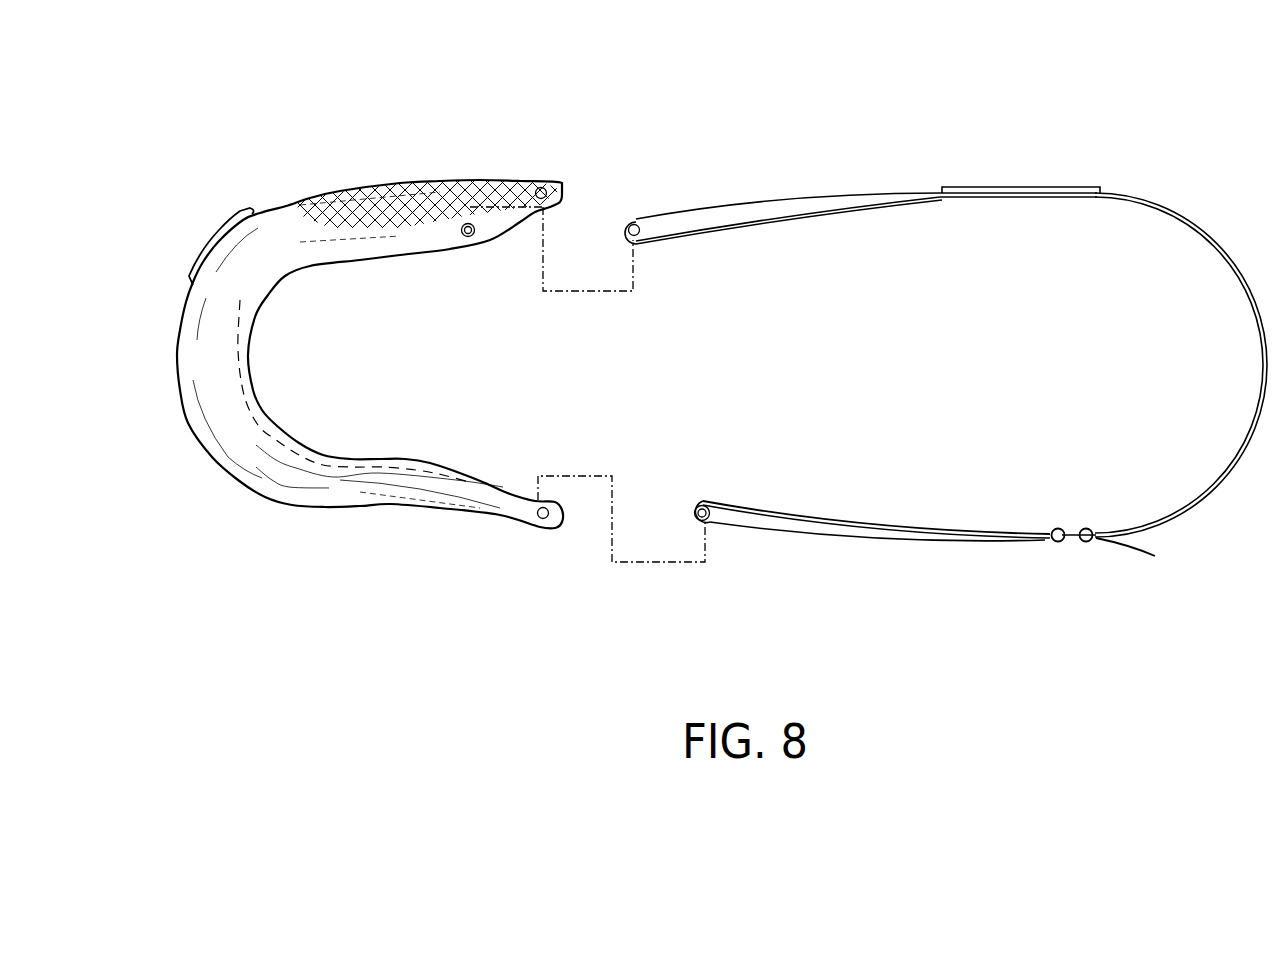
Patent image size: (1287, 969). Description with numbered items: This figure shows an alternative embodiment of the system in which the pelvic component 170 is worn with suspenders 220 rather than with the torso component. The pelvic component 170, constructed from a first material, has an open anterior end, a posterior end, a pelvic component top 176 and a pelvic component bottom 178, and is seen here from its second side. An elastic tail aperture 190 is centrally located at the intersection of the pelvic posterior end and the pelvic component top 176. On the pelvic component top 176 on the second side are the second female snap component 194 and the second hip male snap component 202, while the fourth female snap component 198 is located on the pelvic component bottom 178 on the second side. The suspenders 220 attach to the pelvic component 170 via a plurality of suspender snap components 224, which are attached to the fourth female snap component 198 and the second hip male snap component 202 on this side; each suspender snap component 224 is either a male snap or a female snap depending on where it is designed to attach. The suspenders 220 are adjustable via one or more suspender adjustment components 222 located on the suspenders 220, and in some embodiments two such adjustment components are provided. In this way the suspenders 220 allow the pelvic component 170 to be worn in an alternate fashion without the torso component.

The pelvic component 170 is at (355, 172).
The pelvic component top 176 is at (457, 195).
The pelvic component bottom 178 is at (295, 492).
The elastic tail aperture 190 is at (219, 230).
The second female snap component 194 is at (545, 190).
The fourth female snap component 198 is at (606, 384).
The second hip male snap component 202 is at (470, 238).
The suspenders 220 is at (891, 176).
The suspender adjustment component 222 is at (1073, 540).
The suspender snap component 224 is at (639, 226).